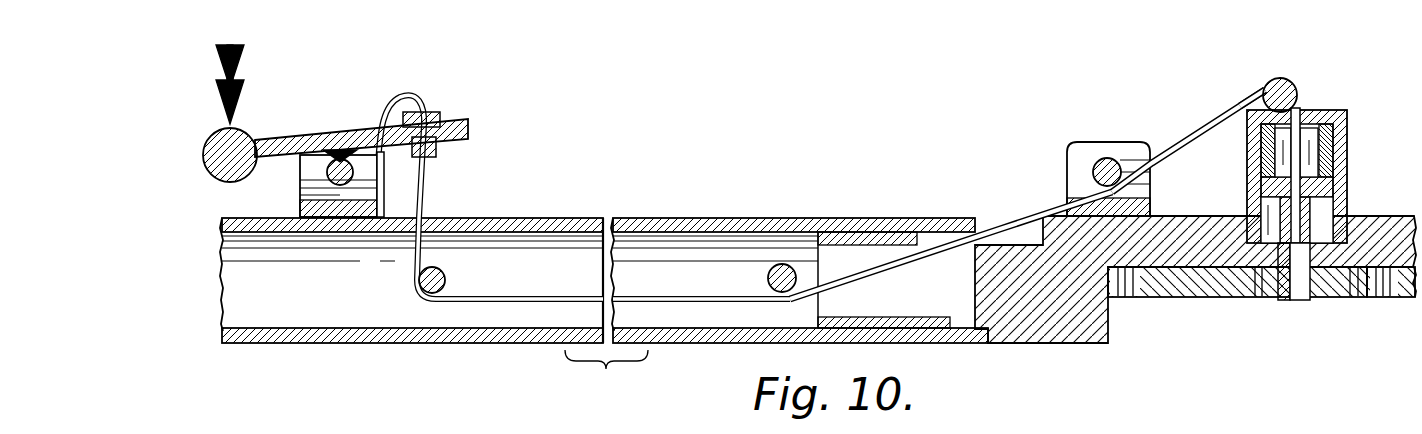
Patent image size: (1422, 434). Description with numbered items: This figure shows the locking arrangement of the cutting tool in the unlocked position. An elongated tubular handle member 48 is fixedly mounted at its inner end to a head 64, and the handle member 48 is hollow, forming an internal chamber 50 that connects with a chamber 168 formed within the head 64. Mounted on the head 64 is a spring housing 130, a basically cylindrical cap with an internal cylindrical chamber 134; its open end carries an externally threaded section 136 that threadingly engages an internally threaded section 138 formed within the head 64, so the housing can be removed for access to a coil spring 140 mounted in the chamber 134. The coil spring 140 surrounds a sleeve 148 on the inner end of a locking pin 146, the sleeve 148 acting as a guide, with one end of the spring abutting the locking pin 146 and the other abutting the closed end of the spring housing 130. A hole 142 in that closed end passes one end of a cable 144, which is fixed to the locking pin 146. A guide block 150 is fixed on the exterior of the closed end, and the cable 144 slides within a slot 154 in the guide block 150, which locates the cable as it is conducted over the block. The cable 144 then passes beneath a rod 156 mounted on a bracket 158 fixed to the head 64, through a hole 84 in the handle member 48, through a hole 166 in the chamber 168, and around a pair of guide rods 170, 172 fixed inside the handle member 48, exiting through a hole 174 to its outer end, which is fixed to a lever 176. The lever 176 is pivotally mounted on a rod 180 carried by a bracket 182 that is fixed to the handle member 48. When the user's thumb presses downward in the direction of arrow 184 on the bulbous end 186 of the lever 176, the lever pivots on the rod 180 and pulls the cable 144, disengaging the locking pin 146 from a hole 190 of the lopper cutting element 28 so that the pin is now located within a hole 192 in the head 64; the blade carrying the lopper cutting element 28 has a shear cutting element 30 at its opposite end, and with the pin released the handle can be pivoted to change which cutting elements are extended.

The arrow 184 is at (243, 62).
The bulbous end 186 is at (240, 125).
The lever 176 is at (335, 133).
The rod 180 is at (300, 194).
The bracket 182 is at (430, 186).
The hole 174 is at (430, 216).
The guide rod 172 is at (418, 302).
The internal chamber 50 is at (562, 243).
The handle member 48 is at (505, 335).
The guide rod 170 is at (782, 264).
The hole 166 is at (928, 228).
The hole 84 is at (992, 215).
The chamber 168 is at (945, 315).
The bracket 158 is at (1077, 152).
The rod 156 is at (1103, 158).
The cable 144 is at (1215, 122).
The guide block 150 is at (1258, 92).
The slot 154 is at (1288, 79).
The hole 142 is at (1301, 112).
The spring housing 130 is at (1346, 134).
The coil spring 140 is at (1346, 158).
The sleeve 148 is at (1248, 150).
The internally threaded section 138 is at (1250, 204).
The internal cylindrical chamber 134 is at (1325, 212).
The locking pin 146 is at (1303, 300).
The hole 190 is at (1285, 300).
The hole 192 is at (1260, 297).
The lopper cutting element 28 is at (1207, 290).
The shear cutting element 30 is at (1129, 300).
The externally threaded section 136 is at (1356, 290).
The head 64 is at (1407, 297).